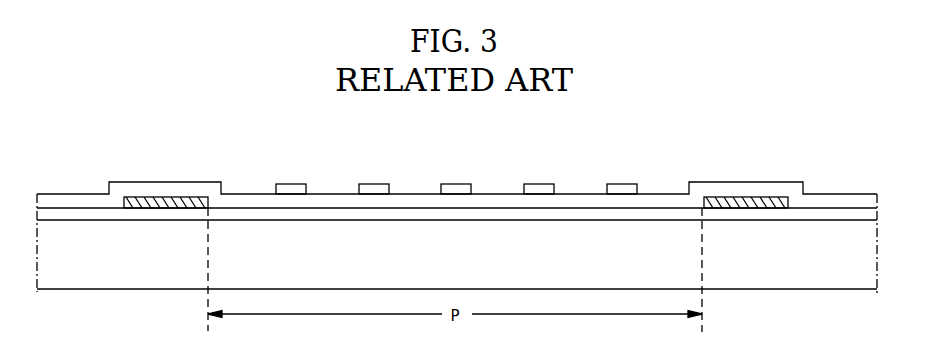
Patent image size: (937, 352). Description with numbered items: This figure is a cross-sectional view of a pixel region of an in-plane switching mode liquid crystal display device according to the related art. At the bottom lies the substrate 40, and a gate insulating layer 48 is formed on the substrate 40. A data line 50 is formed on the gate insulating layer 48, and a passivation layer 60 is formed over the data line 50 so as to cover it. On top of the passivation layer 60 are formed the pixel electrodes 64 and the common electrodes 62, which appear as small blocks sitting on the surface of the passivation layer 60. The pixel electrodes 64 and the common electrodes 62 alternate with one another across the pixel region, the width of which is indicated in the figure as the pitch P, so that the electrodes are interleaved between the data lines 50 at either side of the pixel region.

The substrate 40 is at (862, 283).
The gate insulating layer 48 is at (517, 215).
The data line 50 is at (163, 204).
The passivation layer 60 is at (417, 203).
The common electrode 62 is at (292, 188).
The pixel electrode 64 is at (375, 188).